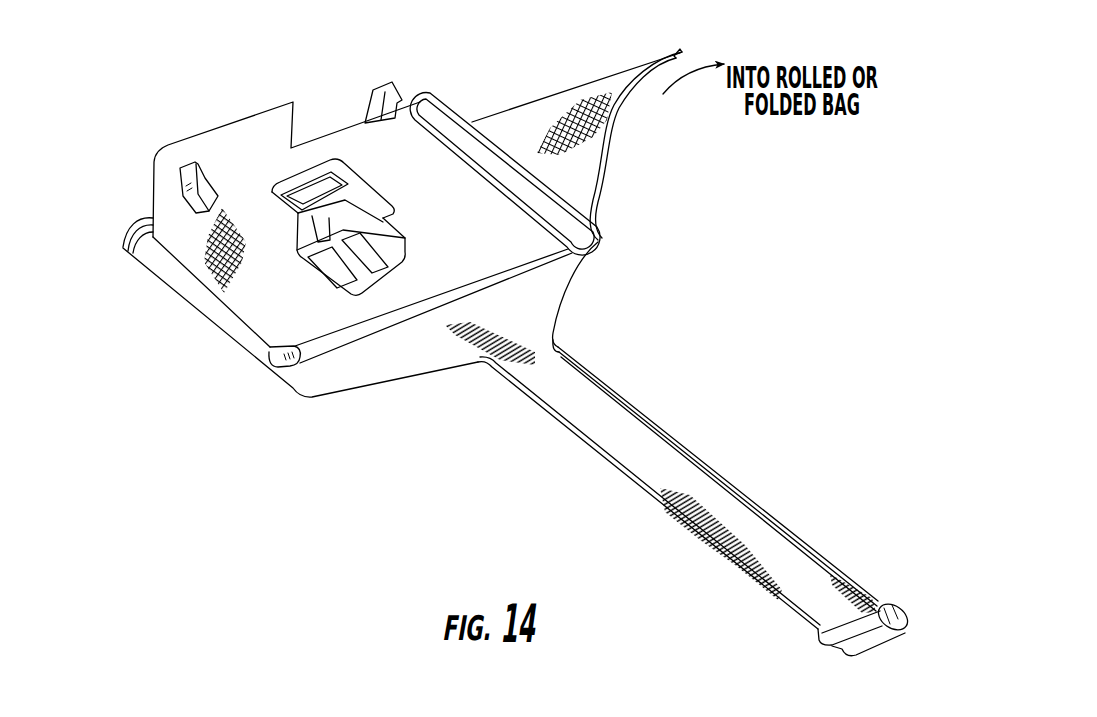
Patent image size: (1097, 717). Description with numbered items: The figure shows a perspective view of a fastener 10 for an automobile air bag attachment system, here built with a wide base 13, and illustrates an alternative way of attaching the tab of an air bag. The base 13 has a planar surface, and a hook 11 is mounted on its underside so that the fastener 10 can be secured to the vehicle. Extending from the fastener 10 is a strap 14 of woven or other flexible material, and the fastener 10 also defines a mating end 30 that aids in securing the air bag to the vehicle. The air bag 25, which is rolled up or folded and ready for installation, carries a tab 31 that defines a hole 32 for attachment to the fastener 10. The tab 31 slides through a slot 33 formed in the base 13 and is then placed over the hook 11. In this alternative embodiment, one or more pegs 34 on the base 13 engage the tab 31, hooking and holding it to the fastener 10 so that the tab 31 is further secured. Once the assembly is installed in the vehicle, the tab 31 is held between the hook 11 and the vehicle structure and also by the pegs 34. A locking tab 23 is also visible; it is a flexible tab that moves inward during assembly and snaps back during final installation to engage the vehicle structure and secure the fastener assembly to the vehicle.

The fastener 10 is at (640, 381).
The hook 11 is at (348, 298).
The base 13 is at (146, 243).
The strap 14 is at (777, 541).
The locking tab 23 is at (297, 177).
The air bag 25 is at (560, 120).
The mating end 30 is at (908, 618).
The tab 31 is at (253, 278).
The hole 32 is at (376, 177).
The slot 33 is at (580, 256).
The pegs 34 is at (181, 172).